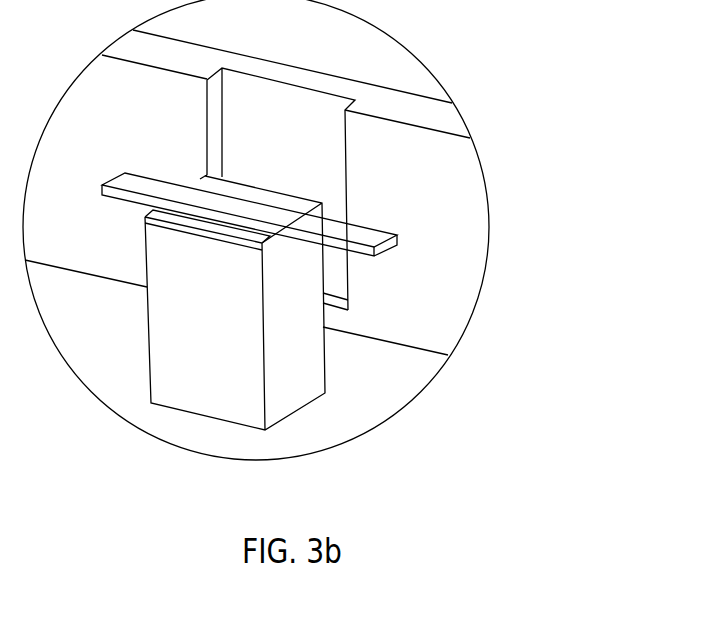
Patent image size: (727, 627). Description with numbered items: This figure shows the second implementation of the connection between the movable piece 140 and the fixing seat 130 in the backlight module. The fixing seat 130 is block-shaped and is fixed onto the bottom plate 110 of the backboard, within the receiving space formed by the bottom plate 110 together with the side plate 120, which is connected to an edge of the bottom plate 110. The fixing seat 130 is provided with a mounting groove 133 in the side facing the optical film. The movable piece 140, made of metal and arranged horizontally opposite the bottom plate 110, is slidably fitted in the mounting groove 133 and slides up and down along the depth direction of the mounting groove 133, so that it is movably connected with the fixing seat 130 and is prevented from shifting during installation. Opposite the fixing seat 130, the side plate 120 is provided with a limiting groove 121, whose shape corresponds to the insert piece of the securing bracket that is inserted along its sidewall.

The bottom plate 110 is at (390, 383).
The side plate 120 is at (443, 163).
The limiting groove 121 is at (272, 98).
The fixing seat 130 is at (183, 377).
The mounting groove 133 is at (193, 184).
The movable piece 140 is at (370, 242).